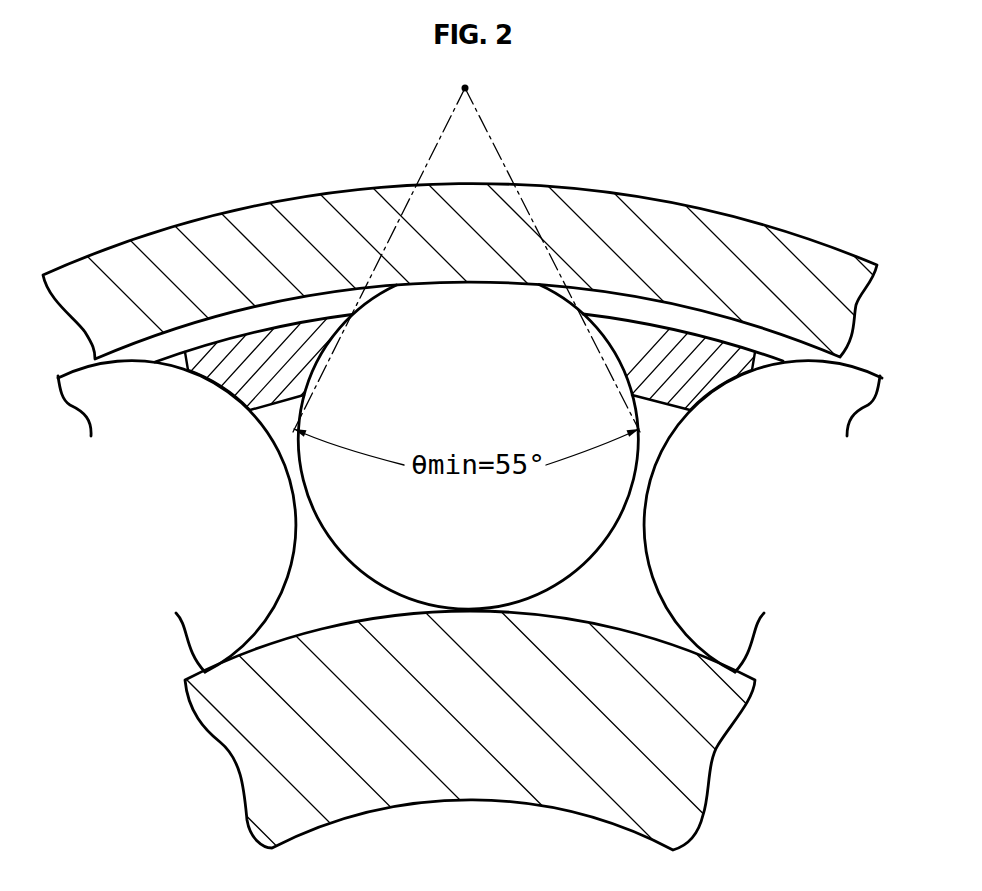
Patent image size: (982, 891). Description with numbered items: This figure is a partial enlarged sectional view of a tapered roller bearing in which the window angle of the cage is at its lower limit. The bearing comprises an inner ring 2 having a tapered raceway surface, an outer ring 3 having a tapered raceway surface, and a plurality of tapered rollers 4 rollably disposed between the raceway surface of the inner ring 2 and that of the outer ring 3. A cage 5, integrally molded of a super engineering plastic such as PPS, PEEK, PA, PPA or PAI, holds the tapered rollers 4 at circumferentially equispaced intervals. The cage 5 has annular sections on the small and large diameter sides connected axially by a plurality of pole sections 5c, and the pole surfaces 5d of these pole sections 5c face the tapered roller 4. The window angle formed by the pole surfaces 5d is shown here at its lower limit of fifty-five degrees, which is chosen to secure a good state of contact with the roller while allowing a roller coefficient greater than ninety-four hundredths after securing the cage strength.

The inner ring 2 is at (495, 786).
The outer ring 3 is at (738, 246).
The tapered roller 4 is at (537, 317).
The cage 5 is at (284, 306).
The pole section 5c is at (240, 346).
The pole surface 5d is at (601, 334).